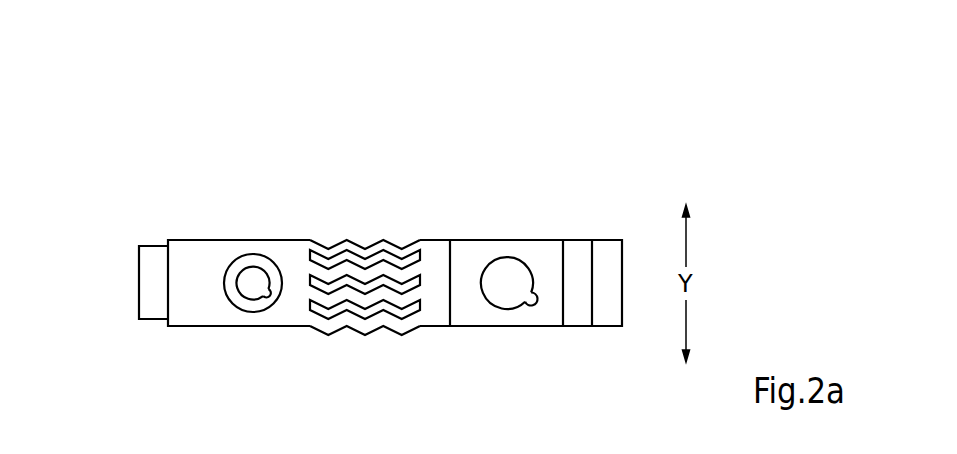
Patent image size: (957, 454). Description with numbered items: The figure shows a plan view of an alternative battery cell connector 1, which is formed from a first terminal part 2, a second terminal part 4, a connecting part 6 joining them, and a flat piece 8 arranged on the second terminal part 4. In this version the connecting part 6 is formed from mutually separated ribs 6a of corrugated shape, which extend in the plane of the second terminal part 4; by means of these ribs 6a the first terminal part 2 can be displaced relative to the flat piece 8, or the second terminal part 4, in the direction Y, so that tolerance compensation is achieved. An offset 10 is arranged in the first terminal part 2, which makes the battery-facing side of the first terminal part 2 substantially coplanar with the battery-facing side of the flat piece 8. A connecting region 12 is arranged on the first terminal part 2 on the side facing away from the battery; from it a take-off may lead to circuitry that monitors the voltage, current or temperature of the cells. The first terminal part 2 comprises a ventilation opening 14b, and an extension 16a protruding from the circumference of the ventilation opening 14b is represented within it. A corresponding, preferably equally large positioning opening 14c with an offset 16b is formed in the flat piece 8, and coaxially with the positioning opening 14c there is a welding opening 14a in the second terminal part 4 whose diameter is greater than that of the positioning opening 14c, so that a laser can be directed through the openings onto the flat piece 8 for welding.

The battery cell connector 1 is at (353, 255).
The first terminal part 2 is at (472, 253).
The second terminal part 4 is at (195, 252).
The connecting part 6 is at (365, 248).
The ribs 6a is at (355, 273).
The flat piece 8 is at (145, 282).
The offset 10 is at (437, 314).
The connecting region 12 is at (577, 253).
The welding opening 14a is at (254, 277).
The ventilation opening 14b is at (530, 293).
The positioning opening 14c is at (248, 295).
The extension 16a is at (532, 302).
The offset 16b is at (267, 292).